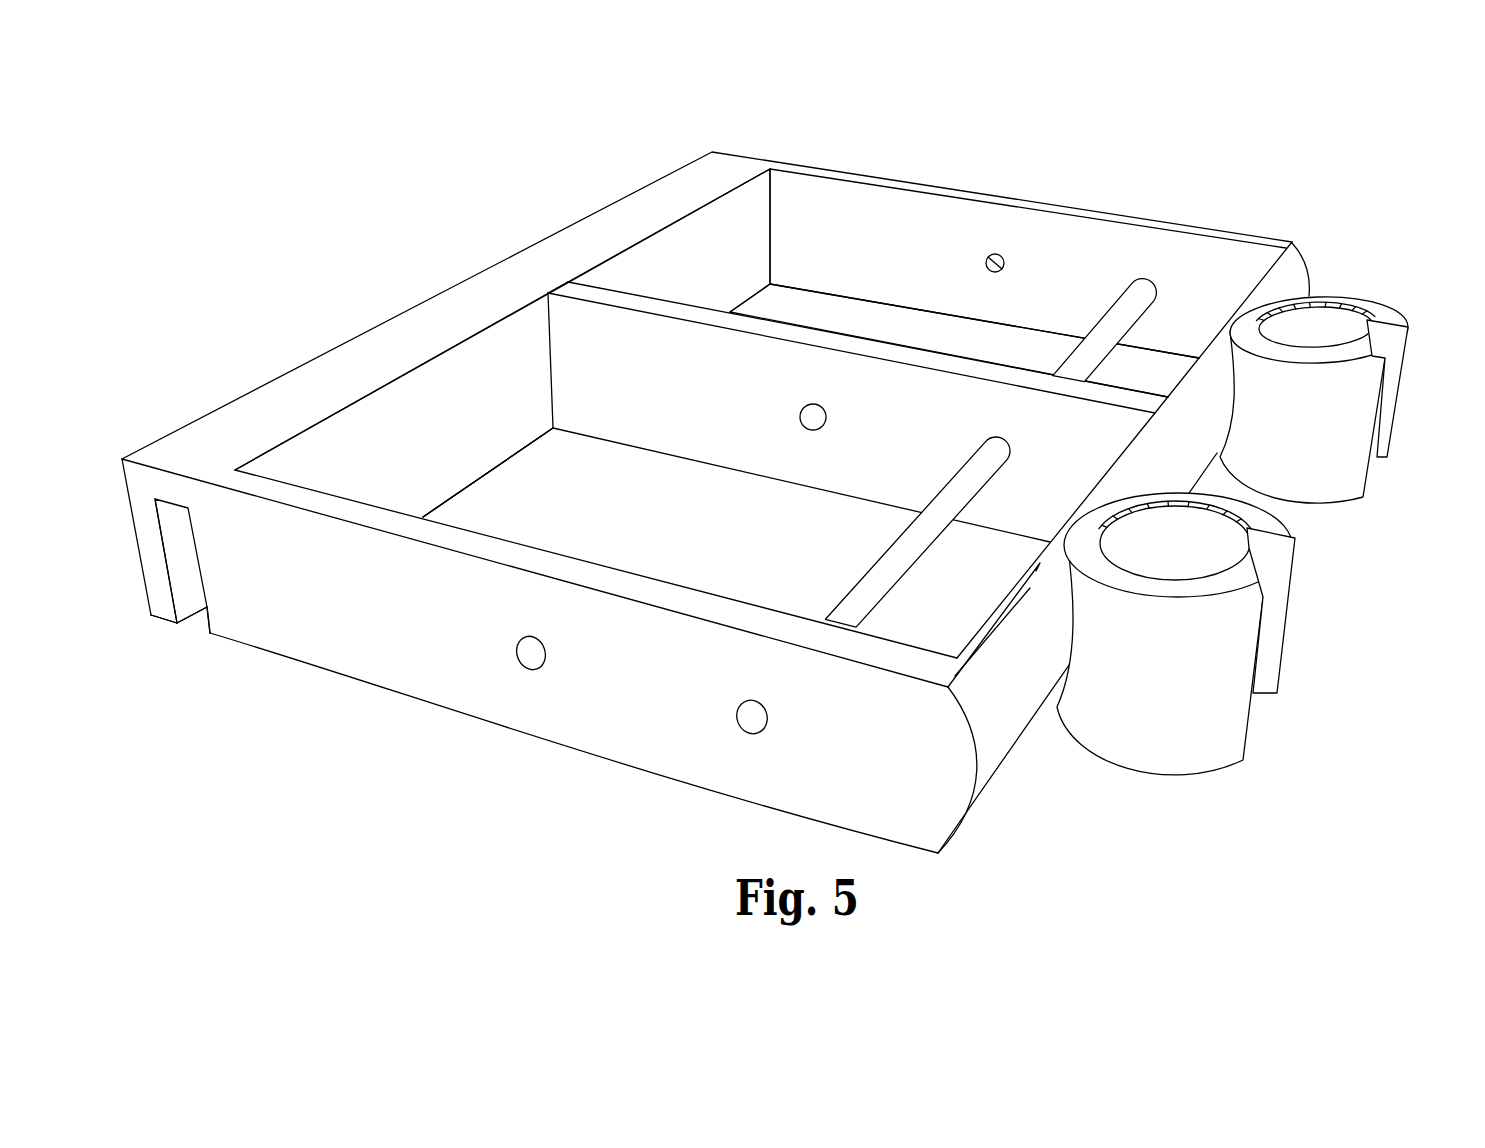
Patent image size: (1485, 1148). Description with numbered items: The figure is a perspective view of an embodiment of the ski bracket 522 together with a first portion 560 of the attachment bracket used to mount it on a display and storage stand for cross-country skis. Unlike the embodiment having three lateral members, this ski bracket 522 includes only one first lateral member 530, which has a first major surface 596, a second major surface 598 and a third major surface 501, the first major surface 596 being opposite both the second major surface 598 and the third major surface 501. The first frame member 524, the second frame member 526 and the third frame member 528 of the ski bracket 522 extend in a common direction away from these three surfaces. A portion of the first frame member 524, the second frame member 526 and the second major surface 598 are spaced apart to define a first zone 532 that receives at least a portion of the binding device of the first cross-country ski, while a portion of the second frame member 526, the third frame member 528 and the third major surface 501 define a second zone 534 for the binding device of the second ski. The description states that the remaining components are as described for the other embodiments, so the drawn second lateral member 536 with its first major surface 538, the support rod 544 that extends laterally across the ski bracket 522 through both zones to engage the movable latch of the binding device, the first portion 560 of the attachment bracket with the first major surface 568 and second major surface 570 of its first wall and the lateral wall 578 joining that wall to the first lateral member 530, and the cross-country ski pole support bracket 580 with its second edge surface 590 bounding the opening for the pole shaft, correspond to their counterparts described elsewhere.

The third major surface 501 is at (685, 275).
The ski bracket 522 is at (1070, 156).
The first frame member 524 is at (393, 625).
The second frame member 526 is at (632, 398).
The third frame member 528 is at (842, 263).
The first lateral member 530 is at (667, 273).
The first zone 532 is at (645, 525).
The second zone 534 is at (868, 335).
The connector strap 536 is at (1327, 259).
The right side wall 538 is at (999, 685).
The pin 544 is at (1078, 355).
The foot 560 is at (141, 644).
The slot 568 is at (178, 553).
The end wall 570 is at (119, 506).
The tab 578 is at (172, 490).
The clamp ring 580 is at (1380, 523).
The clamp flap 590 is at (1392, 337).
The first major surface 596 is at (188, 632).
The second major surface 598 is at (392, 458).